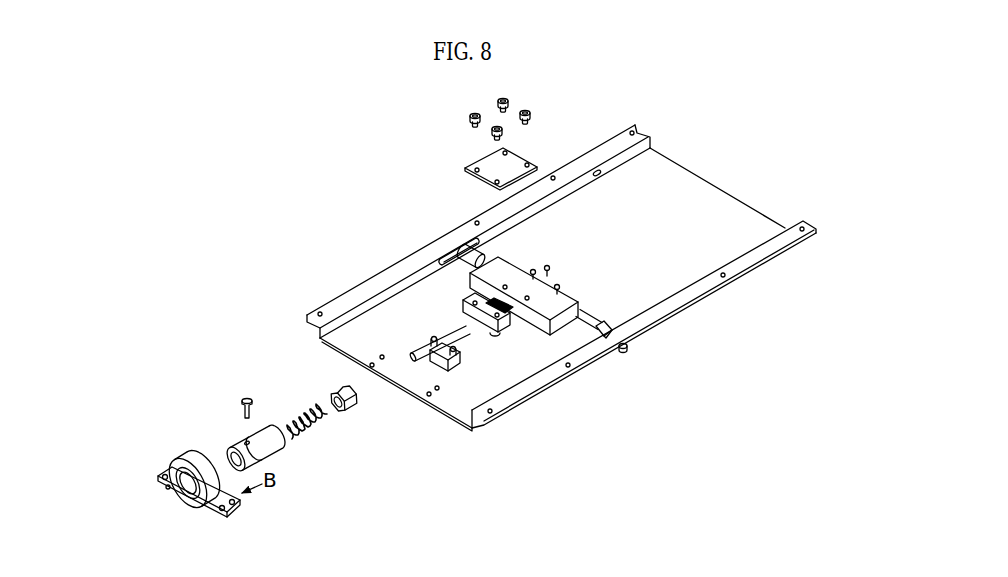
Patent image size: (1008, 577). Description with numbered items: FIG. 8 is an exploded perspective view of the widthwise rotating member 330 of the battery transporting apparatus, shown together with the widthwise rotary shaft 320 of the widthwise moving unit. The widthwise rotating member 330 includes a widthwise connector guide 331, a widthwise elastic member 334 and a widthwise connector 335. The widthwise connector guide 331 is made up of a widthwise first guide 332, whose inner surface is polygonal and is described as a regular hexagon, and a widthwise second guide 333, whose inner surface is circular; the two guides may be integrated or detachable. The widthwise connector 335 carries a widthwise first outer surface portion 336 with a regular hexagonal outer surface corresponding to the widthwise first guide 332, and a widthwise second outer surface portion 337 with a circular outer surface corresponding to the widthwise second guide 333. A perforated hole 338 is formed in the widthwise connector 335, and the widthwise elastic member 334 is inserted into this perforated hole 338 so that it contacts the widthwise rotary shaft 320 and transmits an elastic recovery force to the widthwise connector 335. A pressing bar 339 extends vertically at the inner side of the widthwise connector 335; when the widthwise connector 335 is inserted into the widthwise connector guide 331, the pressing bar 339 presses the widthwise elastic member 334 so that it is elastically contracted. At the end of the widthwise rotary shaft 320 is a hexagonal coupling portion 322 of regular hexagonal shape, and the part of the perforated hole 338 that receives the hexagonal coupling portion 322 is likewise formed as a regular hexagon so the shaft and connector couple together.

The widthwise rotary shaft 320 is at (457, 328).
The hexagonal coupling portion 322 is at (352, 400).
The widthwise rotating member 330 is at (259, 404).
The widthwise connector guide 331 is at (173, 440).
The widthwise first guide 332 is at (200, 458).
The widthwise second guide 333 is at (170, 488).
The widthwise elastic member 334 is at (313, 423).
The widthwise connector 335 is at (304, 457).
The widthwise first outer surface portion 336 is at (266, 458).
The widthwise second outer surface portion 337 is at (263, 457).
The perforated hole 338 is at (228, 460).
The pressing bar 339 is at (247, 398).